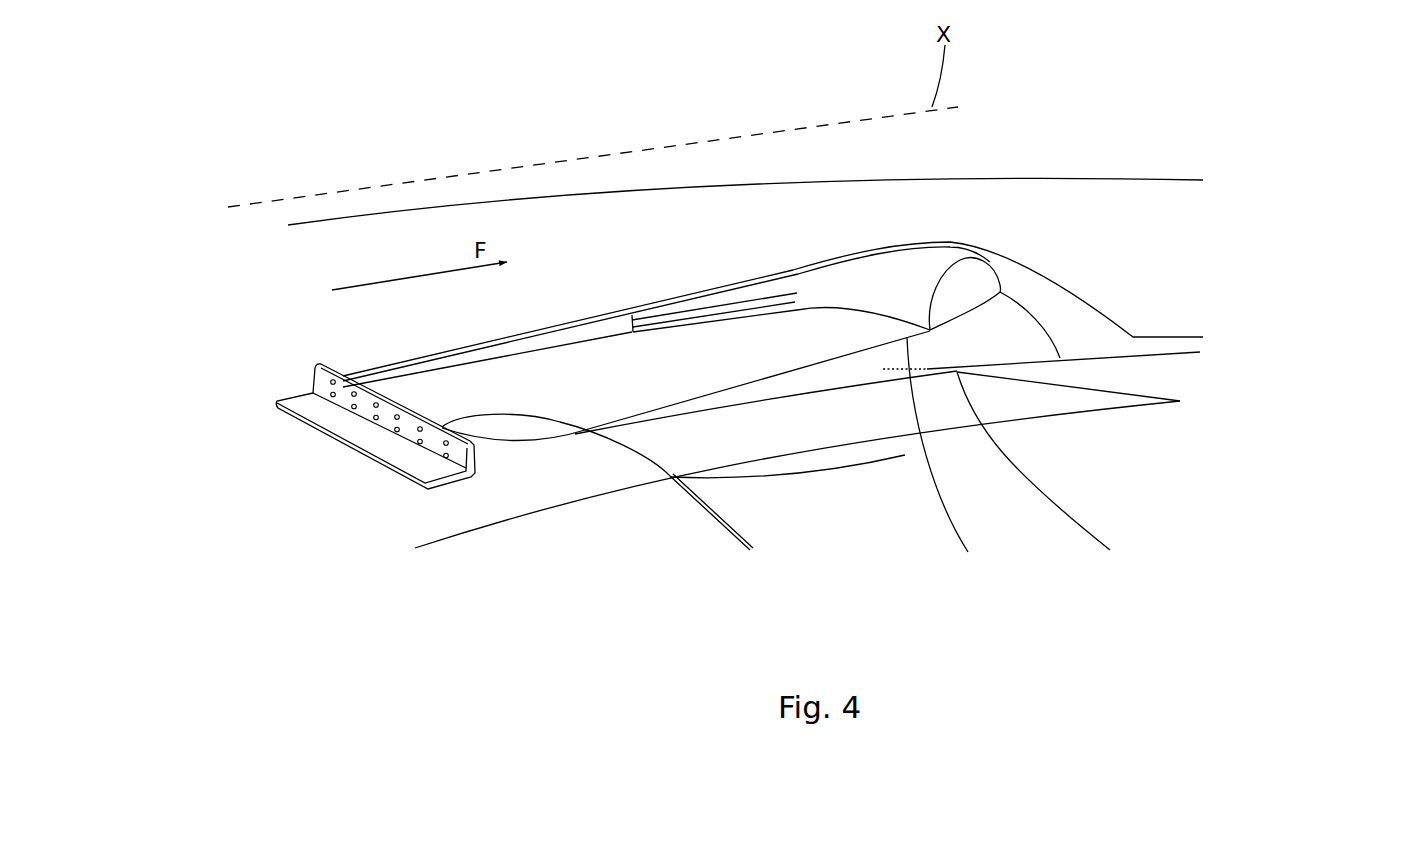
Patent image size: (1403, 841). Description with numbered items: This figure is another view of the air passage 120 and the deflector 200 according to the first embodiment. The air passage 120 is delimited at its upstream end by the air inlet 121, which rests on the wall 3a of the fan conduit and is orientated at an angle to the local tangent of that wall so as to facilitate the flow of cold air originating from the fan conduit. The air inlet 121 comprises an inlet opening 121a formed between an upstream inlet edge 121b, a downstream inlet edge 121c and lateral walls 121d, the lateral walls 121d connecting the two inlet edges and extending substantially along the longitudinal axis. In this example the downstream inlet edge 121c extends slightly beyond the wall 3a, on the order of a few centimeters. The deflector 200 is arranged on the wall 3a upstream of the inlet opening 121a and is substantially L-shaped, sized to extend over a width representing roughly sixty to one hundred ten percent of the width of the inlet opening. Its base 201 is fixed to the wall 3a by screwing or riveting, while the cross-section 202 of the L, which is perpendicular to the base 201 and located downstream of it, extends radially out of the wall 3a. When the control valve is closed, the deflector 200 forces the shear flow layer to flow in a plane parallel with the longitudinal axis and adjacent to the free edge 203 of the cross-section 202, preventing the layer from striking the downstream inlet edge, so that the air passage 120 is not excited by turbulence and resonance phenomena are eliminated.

The wall of the fan conduit 3a is at (1103, 203).
The air passage 120 is at (1088, 518).
The air inlet 121 is at (728, 268).
The inlet opening 121a is at (738, 341).
The upstream inlet edge 121b is at (510, 405).
The downstream inlet edge 121c is at (945, 262).
The lateral walls 121d is at (800, 367).
The deflector 200 is at (362, 449).
The base 201 is at (318, 415).
The cross-section 202 is at (473, 457).
The free edge 203 is at (390, 383).